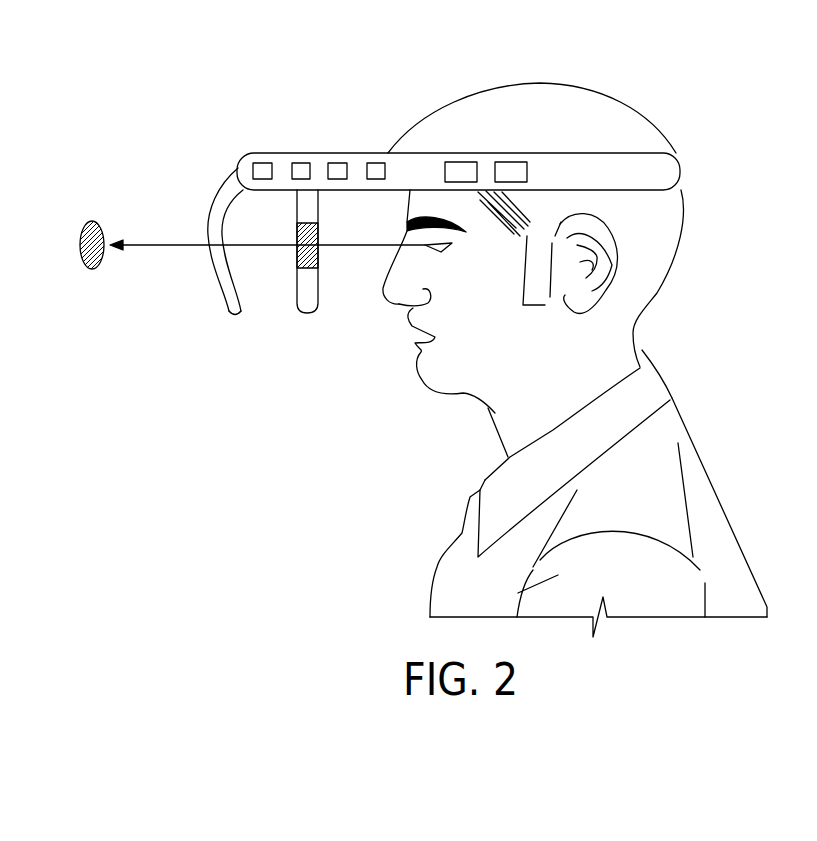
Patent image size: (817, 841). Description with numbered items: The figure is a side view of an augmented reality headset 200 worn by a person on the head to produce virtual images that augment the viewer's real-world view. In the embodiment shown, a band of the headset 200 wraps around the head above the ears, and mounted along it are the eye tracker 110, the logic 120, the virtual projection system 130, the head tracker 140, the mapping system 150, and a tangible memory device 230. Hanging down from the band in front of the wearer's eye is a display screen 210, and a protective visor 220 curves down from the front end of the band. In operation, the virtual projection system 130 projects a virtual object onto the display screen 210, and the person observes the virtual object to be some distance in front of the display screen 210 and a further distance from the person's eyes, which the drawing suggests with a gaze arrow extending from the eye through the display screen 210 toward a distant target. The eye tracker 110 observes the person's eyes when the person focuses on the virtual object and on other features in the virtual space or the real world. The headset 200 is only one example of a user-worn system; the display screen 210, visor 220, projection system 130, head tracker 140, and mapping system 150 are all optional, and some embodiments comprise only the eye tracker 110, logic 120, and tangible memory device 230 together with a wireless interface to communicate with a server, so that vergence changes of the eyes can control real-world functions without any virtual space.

The augmented reality headset 200 is at (668, 158).
The eye tracker 110 is at (302, 163).
The logic 120 is at (468, 162).
The virtual projection system 130 is at (377, 163).
The head tracker 140 is at (338, 163).
The mapping system 150 is at (260, 163).
The tangible memory device 230 is at (512, 162).
The display screen 210 is at (300, 317).
The protective visor 220 is at (240, 317).